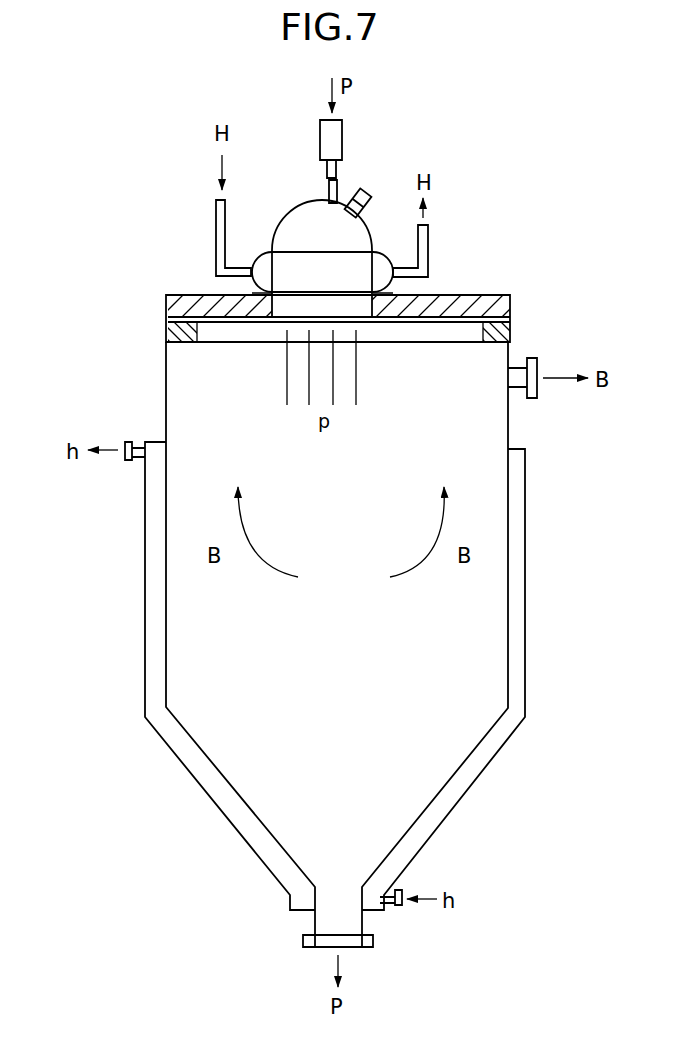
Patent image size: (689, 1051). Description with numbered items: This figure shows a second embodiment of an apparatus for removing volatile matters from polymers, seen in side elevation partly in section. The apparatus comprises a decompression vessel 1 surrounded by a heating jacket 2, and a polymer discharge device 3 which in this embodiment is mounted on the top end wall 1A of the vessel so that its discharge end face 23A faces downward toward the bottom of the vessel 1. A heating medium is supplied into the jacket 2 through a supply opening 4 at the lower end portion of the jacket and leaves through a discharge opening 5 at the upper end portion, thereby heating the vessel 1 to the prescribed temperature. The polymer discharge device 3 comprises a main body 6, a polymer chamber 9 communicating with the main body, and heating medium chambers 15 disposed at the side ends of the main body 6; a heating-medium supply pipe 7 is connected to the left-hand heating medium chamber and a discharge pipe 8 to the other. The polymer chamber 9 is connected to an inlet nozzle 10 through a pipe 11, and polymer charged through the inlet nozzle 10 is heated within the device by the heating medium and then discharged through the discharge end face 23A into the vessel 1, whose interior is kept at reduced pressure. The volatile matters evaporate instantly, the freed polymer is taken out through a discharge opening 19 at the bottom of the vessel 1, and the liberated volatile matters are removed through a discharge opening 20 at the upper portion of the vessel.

The decompression vessel 1 is at (166, 700).
The top end wall 1A is at (170, 292).
The heating jacket 2 is at (145, 636).
The polymer discharge device 3 is at (372, 190).
The supply opening 4 is at (398, 905).
The discharge opening 5 is at (127, 442).
The main body 6 is at (365, 263).
The heating-medium supply pipe 7 is at (226, 208).
The discharge pipe 8 is at (428, 262).
The polymer chamber 9 is at (290, 222).
The inlet nozzle 10 is at (343, 140).
The pipe 11 is at (329, 186).
The heating medium chambers 15 is at (250, 284).
The discharge opening 19 is at (315, 923).
The discharge opening 20 is at (537, 366).
The discharge end face 23A is at (355, 297).